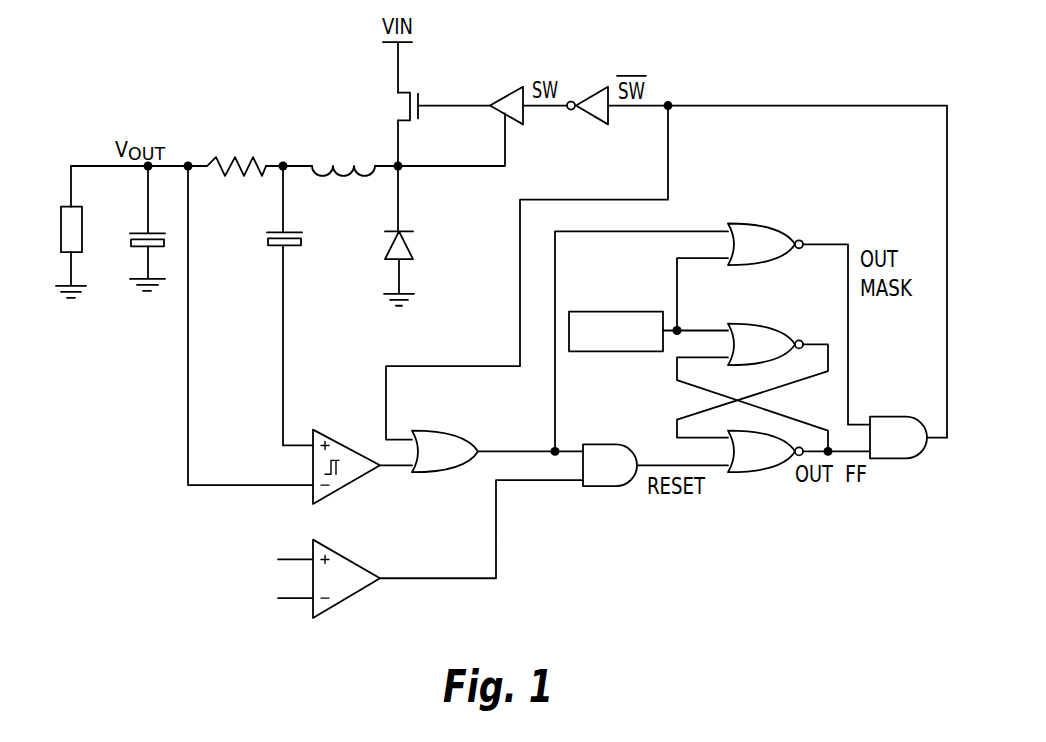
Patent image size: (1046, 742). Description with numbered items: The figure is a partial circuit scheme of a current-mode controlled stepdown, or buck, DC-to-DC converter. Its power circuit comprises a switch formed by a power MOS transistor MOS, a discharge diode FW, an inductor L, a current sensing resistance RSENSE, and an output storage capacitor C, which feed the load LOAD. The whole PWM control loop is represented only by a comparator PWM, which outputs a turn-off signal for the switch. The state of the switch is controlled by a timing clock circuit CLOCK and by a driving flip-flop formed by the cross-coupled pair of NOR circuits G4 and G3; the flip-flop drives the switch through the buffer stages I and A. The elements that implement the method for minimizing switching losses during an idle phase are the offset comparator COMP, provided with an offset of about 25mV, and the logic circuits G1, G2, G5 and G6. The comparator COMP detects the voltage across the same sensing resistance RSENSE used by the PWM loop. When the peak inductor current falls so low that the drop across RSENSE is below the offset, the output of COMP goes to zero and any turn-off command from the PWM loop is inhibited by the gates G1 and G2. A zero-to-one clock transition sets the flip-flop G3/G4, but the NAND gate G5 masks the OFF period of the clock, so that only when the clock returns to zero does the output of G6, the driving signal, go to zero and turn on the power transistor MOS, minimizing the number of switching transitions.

The load LOAD is at (68, 218).
The output storage capacitor C is at (139, 228).
The current sensing resistance RSENSE is at (241, 146).
The inductor L is at (343, 152).
The offset of the comparator 25mV is at (307, 305).
The power MOS transistor MOS is at (444, 78).
The driving buffer stage A is at (514, 93).
The driving buffer stage I is at (596, 92).
The discharge diode FW is at (429, 268).
The offset comparator COMP is at (362, 472).
The logic circuit G1 is at (497, 452).
The logic circuit G2 is at (655, 465).
The NOR circuit G3 is at (799, 452).
The NOR circuit G4 is at (752, 388).
The NAND gate G5 is at (773, 323).
The logic circuit G6 is at (908, 438).
The timing clock circuit CLOCK is at (648, 332).
The PWM comparator PWM is at (430, 549).